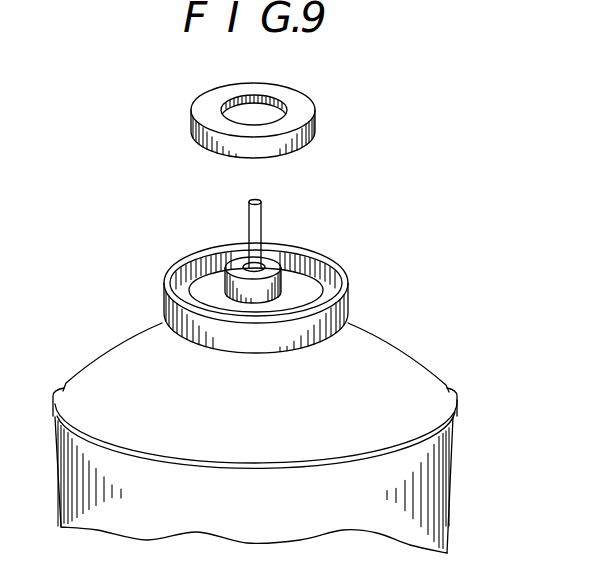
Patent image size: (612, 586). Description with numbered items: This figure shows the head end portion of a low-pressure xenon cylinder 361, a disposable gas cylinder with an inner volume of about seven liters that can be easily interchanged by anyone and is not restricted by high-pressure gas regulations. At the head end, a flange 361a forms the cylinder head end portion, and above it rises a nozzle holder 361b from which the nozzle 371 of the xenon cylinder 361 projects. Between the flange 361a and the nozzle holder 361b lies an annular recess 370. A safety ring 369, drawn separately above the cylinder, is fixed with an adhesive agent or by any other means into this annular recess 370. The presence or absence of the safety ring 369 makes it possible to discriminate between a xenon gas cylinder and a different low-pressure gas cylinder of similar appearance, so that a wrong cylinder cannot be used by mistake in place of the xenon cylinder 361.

The safety ring 369 is at (300, 105).
The nozzle 371 is at (258, 231).
The nozzle holder 361b is at (274, 270).
The annular recess 370 is at (293, 300).
The flange 361a is at (346, 307).
The xenon cylinder 361 is at (417, 380).